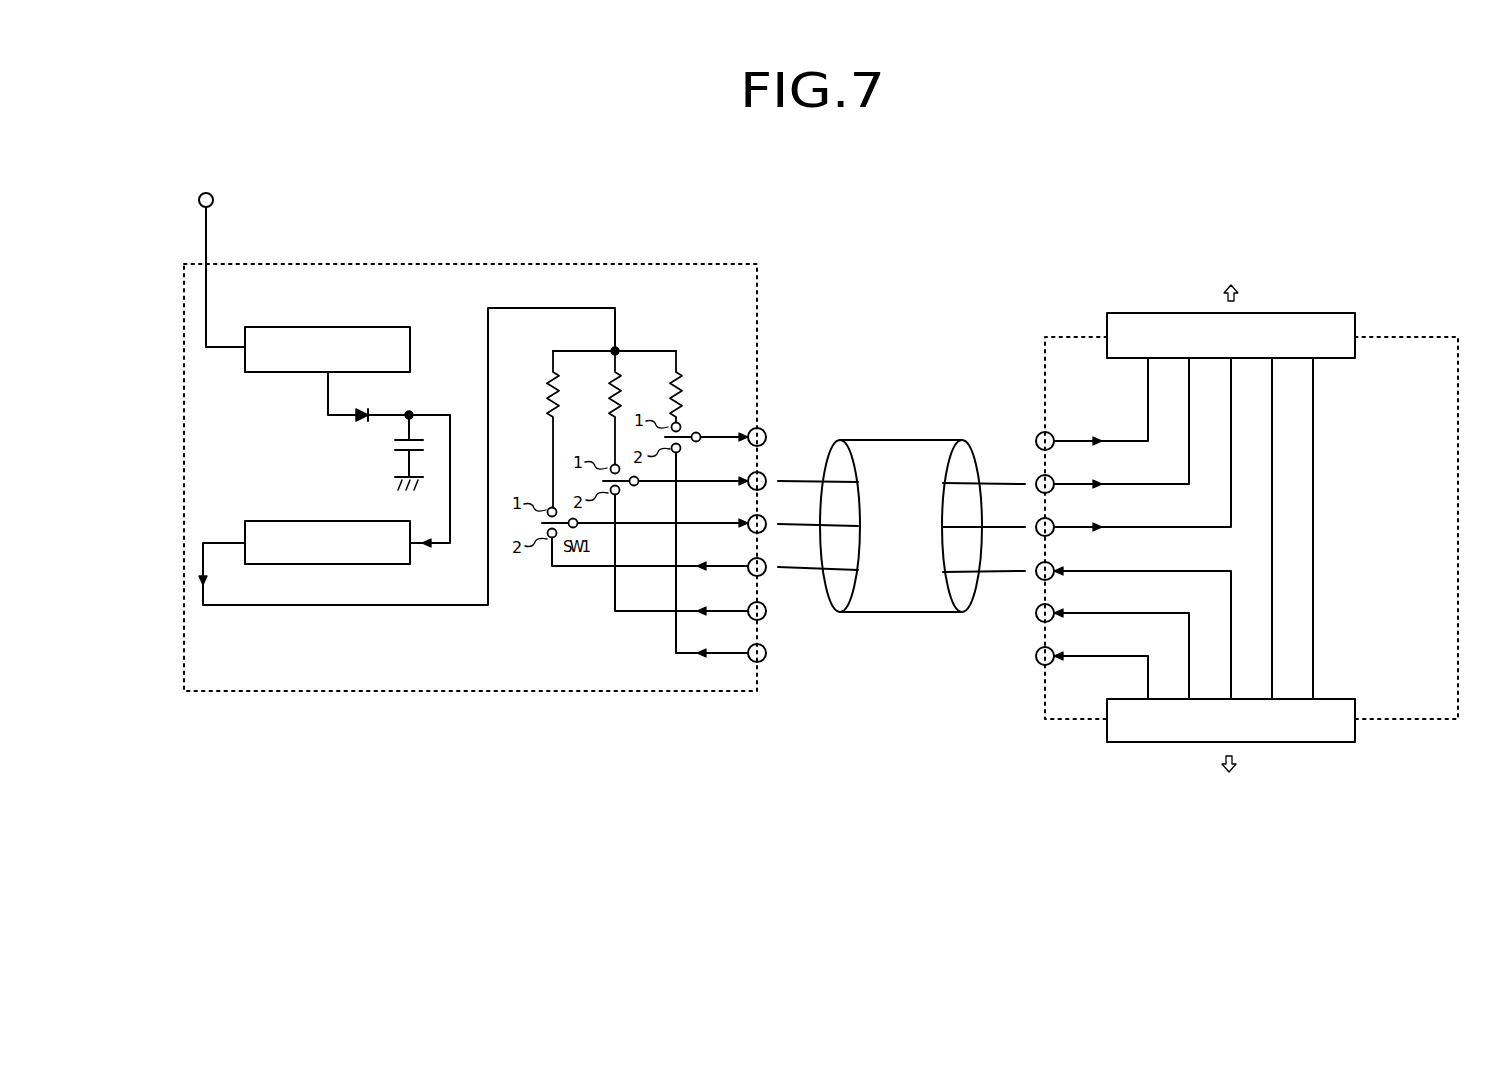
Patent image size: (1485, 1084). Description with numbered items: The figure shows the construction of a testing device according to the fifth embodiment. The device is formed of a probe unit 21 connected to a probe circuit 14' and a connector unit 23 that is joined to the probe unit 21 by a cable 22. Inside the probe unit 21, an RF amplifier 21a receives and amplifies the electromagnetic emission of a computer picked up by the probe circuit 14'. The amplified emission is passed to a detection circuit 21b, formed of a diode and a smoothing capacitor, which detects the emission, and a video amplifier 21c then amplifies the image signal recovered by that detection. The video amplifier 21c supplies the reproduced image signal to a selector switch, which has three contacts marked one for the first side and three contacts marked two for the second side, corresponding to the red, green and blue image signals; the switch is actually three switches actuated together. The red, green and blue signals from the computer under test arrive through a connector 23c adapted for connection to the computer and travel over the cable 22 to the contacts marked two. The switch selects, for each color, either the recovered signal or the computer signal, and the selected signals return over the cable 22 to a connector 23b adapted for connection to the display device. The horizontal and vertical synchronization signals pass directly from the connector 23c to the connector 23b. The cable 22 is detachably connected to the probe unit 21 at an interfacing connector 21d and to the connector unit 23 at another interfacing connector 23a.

The probe circuit 14' is at (227, 178).
The probe unit 21 is at (217, 697).
The RF amplifier 21a is at (372, 327).
The detection circuit 21b is at (410, 412).
The video amplifier 21c is at (372, 565).
The interfacing connector 21d is at (764, 429).
The cable 22 is at (900, 613).
The connector unit 23 is at (1418, 318).
The interfacing connector 23a is at (1038, 431).
The connector 23b is at (1318, 313).
The connector 23c is at (1313, 743).